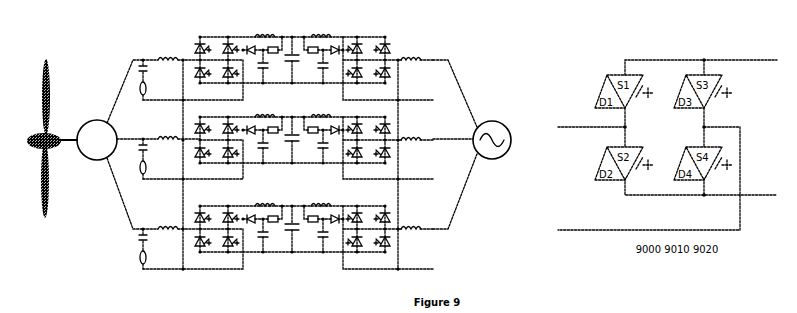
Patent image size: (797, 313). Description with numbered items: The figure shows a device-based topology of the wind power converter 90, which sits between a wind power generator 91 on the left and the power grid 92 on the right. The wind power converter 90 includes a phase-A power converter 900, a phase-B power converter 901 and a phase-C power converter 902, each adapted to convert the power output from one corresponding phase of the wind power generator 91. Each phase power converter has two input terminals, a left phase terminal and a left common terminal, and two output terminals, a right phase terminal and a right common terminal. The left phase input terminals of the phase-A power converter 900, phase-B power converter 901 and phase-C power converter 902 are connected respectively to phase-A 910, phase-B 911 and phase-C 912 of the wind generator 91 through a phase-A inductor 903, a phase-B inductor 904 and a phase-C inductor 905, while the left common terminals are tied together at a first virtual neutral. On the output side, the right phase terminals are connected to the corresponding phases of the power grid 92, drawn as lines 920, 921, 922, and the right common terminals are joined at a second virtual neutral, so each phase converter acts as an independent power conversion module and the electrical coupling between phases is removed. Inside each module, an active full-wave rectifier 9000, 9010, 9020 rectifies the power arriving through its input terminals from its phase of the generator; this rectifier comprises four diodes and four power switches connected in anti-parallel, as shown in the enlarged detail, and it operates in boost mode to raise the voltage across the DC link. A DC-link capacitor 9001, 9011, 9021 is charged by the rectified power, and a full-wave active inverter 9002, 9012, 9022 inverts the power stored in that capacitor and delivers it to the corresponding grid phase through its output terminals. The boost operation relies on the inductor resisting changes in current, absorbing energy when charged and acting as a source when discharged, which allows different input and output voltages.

The wind power converter 90 is at (277, 144).
The wind power generator 91 is at (97, 131).
The power grid 92 is at (500, 138).
The phase-A power converter 900 is at (288, 59).
The phase-B power converter 901 is at (288, 143).
The phase-C power converter 902 is at (288, 231).
The phase-A inductor 903 is at (161, 79).
The phase-B inductor 904 is at (161, 158).
The phase-C inductor 905 is at (161, 248).
The phase-A of the wind generator 910 is at (120, 91).
The phase-B of the wind generator 911 is at (130, 130).
The phase-C of the wind generator 912 is at (123, 200).
The first phase utility line 920 is at (455, 93).
The second phase utility line 921 is at (453, 130).
The third phase utility line 922 is at (456, 191).
The active full-wave rectifier 9000 is at (219, 51).
The DC-link capacitor 9001 is at (292, 51).
The full-wave active inverter 9002 is at (366, 51).
The active full-wave rectifier 9010 is at (219, 134).
The DC-link capacitor 9011 is at (292, 134).
The full-wave active inverter 9012 is at (366, 134).
The active full-wave rectifier 9020 is at (219, 223).
The DC-link capacitor 9021 is at (292, 223).
The full-wave active inverter 9022 is at (366, 223).